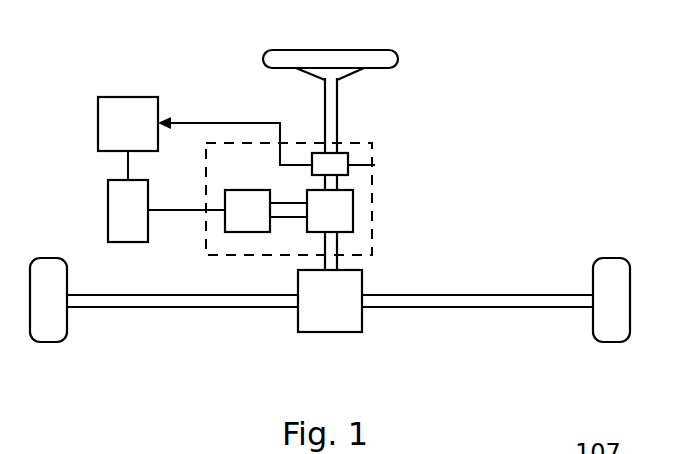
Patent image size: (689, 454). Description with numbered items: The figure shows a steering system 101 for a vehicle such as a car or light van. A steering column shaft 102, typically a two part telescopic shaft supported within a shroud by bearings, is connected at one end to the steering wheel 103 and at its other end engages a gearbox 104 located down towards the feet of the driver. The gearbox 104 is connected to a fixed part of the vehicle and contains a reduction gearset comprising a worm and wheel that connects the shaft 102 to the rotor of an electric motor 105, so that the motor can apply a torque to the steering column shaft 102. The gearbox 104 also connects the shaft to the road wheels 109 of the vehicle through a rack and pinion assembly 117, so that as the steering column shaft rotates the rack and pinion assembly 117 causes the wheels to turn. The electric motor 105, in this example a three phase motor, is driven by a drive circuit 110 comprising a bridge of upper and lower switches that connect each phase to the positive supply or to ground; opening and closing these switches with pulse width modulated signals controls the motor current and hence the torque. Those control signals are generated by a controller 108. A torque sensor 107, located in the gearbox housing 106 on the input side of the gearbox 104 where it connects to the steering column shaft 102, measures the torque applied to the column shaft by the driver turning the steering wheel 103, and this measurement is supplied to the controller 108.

The steering system 101 is at (405, 210).
The steering column shaft 102 is at (337, 100).
The steering wheel 103 is at (387, 50).
The gearbox 104 is at (343, 205).
The electric motor 105 is at (240, 232).
The gearbox housing 106 is at (372, 238).
The torque sensor 107 is at (375, 165).
The controller 108 is at (130, 103).
The road wheels 109 is at (57, 328).
The drive circuit 110 is at (115, 200).
The rack and pinion assembly 117 is at (318, 320).